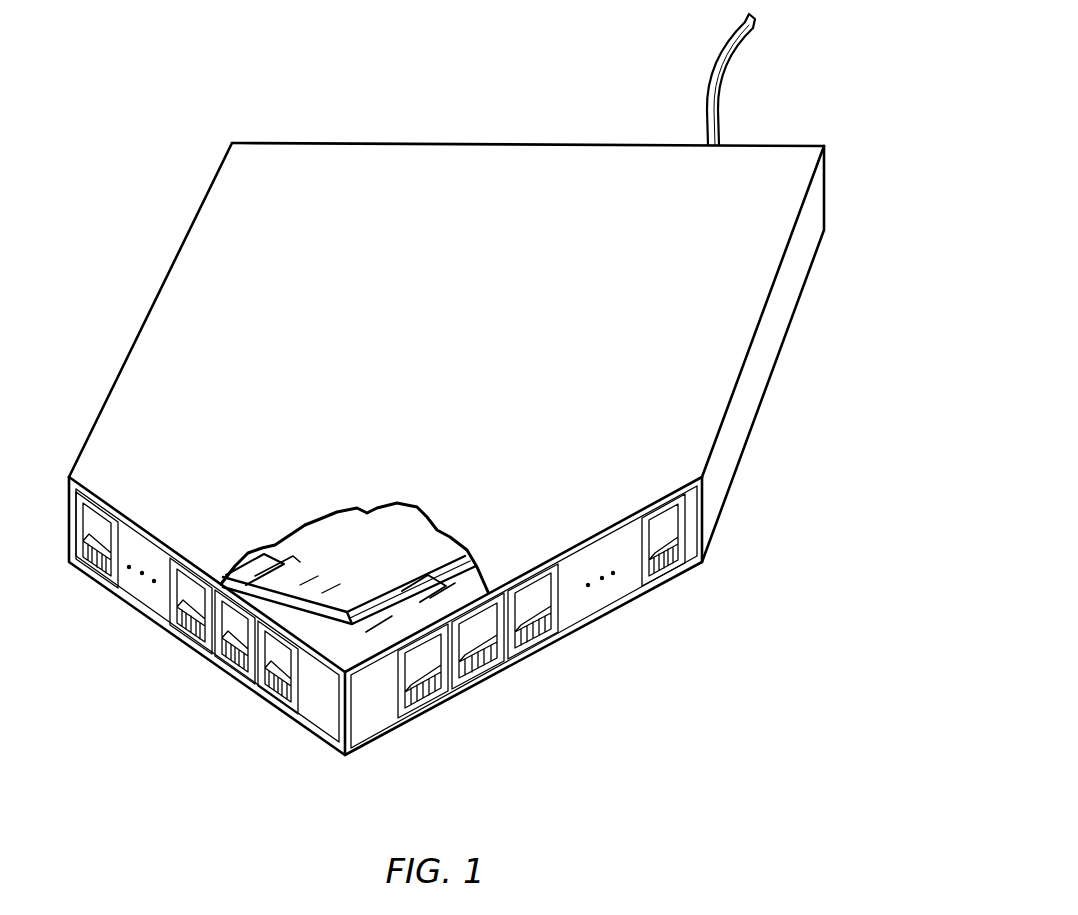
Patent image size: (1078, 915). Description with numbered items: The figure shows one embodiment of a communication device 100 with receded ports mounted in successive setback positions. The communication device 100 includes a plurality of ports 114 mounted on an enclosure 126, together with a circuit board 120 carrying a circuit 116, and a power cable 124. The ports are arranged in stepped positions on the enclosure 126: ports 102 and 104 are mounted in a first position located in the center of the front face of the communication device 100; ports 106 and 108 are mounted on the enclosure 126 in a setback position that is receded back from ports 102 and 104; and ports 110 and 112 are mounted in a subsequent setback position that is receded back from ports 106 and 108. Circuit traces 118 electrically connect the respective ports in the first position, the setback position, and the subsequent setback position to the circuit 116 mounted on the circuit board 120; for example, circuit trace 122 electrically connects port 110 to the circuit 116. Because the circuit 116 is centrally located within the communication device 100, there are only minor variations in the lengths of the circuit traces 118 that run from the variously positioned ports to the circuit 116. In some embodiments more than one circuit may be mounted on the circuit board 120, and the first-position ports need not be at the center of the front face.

The communication device 100 is at (320, 98).
The port 102 is at (267, 703).
The port 104 is at (434, 700).
The port 106 is at (230, 667).
The port 108 is at (490, 672).
The port 110 is at (185, 637).
The port 112 is at (548, 646).
The ports 114 is at (96, 651).
The circuit 116 is at (367, 532).
The circuit traces 118 is at (422, 600).
The circuit board 120 is at (262, 580).
The circuit trace 122 is at (290, 582).
The power cable 124 is at (718, 72).
The enclosure 126 is at (520, 157).